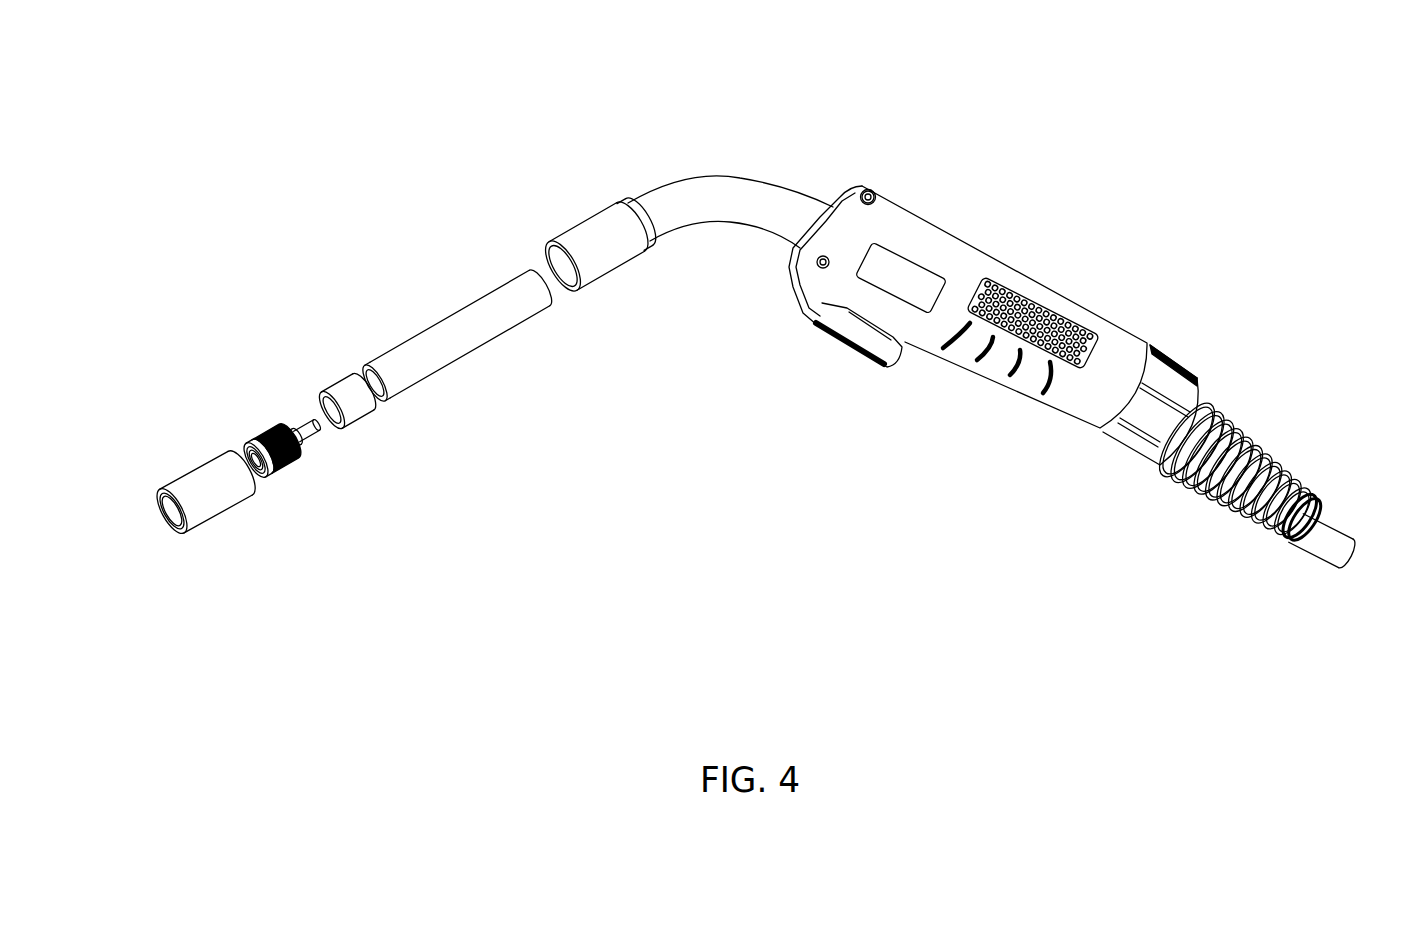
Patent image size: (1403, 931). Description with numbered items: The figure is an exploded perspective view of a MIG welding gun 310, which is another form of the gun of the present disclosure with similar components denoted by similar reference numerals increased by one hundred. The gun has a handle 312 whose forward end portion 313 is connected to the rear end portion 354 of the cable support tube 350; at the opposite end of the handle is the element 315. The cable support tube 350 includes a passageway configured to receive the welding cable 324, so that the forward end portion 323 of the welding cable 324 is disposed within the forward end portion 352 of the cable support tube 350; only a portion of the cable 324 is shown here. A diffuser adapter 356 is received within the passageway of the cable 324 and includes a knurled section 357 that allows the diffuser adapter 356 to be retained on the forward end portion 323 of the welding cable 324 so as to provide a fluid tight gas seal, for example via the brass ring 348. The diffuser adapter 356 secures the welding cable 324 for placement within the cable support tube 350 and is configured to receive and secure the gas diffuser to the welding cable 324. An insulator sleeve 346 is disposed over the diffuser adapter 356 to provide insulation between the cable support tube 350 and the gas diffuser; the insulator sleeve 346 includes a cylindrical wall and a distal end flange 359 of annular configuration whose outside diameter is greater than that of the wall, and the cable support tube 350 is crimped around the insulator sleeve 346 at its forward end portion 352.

The MIG welding gun 310 is at (887, 137).
The handle 312 is at (992, 245).
The forward end portion of the handle 313 is at (873, 193).
The rear connector / strain relief 315 is at (1178, 362).
The forward end portion of the welding cable 323 is at (365, 365).
The welding cable 324 is at (447, 317).
The insulator sleeve 346 is at (202, 528).
The brass ring 348 is at (363, 420).
The cable support tube 350 is at (622, 203).
The forward end portion of the cable support tube 352 is at (583, 220).
The rear end portion of the cable support tube 354 is at (737, 177).
The diffuser adapter 356 is at (273, 430).
The knurled section 357 is at (317, 430).
The distal end flange 359 is at (258, 468).